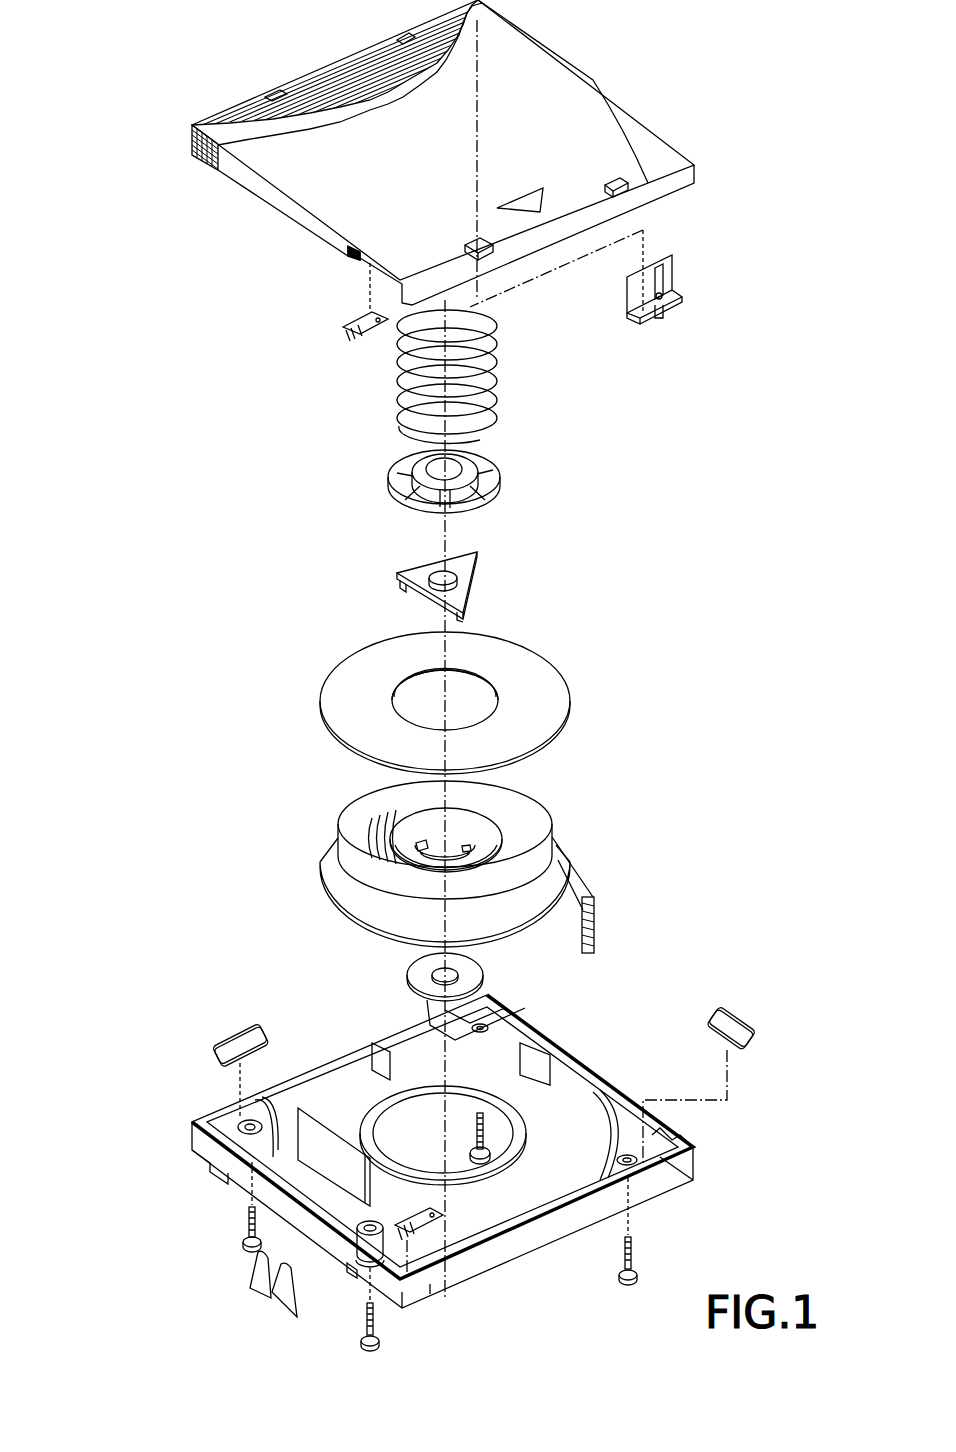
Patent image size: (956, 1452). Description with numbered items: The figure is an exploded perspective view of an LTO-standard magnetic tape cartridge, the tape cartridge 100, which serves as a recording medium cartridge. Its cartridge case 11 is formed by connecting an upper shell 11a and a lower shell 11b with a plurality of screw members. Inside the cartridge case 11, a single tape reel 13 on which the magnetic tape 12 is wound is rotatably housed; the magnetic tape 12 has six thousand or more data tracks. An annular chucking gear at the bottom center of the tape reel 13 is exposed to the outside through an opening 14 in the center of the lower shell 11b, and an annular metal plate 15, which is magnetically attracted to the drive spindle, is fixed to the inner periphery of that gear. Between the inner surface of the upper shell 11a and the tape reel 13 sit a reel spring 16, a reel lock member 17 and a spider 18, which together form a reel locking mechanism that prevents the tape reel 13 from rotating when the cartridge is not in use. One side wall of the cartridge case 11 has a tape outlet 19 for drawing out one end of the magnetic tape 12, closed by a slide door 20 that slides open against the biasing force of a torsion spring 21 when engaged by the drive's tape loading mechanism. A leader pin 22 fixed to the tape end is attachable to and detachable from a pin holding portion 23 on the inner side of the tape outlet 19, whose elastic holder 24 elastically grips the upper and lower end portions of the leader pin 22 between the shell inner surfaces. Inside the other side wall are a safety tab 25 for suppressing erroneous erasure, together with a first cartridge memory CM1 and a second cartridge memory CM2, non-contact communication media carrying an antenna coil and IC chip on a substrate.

The tape cartridge 100 is at (135, 135).
The cartridge case 11 is at (224, 194).
The upper shell 11a is at (530, 72).
The lower shell 11b is at (578, 1057).
The magnetic tape 12 is at (523, 823).
The tape reel 13 is at (307, 663).
The opening 14 is at (503, 1140).
The annular metal plate 15 is at (420, 970).
The reel spring 16 is at (493, 373).
The reel lock member 17 is at (392, 468).
The spider 18 is at (483, 580).
The tape outlet 19 is at (352, 267).
The slide door 20 is at (330, 1143).
The torsion spring 21 is at (270, 1297).
The leader pin 22 is at (590, 897).
The pin holding portion 23 is at (390, 1302).
The elastic holder 24 is at (350, 313).
The safety tab 25 is at (673, 267).
The first cartridge memory CM1 is at (215, 1050).
The second cartridge memory CM2 is at (737, 1005).